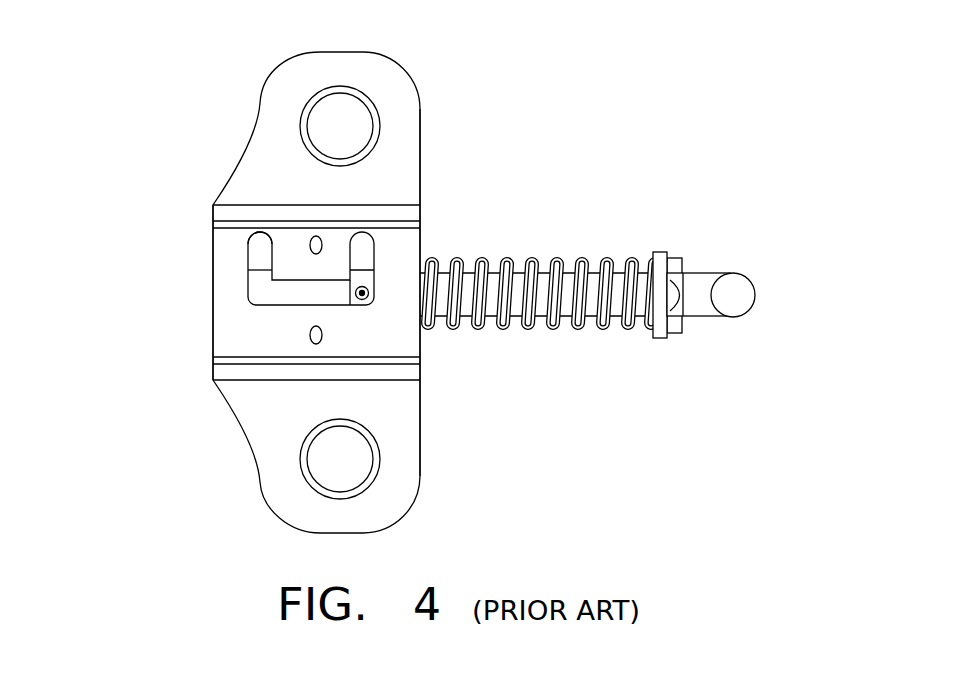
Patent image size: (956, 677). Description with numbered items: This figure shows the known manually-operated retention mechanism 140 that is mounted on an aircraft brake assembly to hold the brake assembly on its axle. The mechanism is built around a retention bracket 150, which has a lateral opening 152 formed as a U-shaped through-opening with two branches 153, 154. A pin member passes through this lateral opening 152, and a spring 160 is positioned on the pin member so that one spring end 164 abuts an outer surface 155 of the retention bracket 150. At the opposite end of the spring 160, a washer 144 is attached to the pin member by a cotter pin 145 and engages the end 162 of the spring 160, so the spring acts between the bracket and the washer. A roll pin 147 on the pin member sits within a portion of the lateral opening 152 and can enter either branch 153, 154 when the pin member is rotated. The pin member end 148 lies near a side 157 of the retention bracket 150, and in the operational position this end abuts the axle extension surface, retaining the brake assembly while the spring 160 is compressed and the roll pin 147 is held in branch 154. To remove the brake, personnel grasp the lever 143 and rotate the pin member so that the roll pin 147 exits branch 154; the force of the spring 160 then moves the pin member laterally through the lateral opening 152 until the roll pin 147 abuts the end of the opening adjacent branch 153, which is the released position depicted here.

The retention mechanism 140 is at (165, 55).
The retention bracket 150 is at (327, 50).
The side 157 is at (210, 336).
The outer surface 155 is at (420, 246).
The pin member end 148 is at (262, 291).
The branch 154 is at (256, 258).
The lateral opening 152 is at (275, 287).
The branch 153 is at (366, 252).
The roll pin 147 is at (362, 300).
The spring 160 is at (535, 331).
The spring end 164 is at (425, 330).
The end of the spring 162 is at (657, 252).
The cotter pin 145 is at (682, 259).
The washer 144 is at (657, 340).
The lever 143 is at (760, 277).